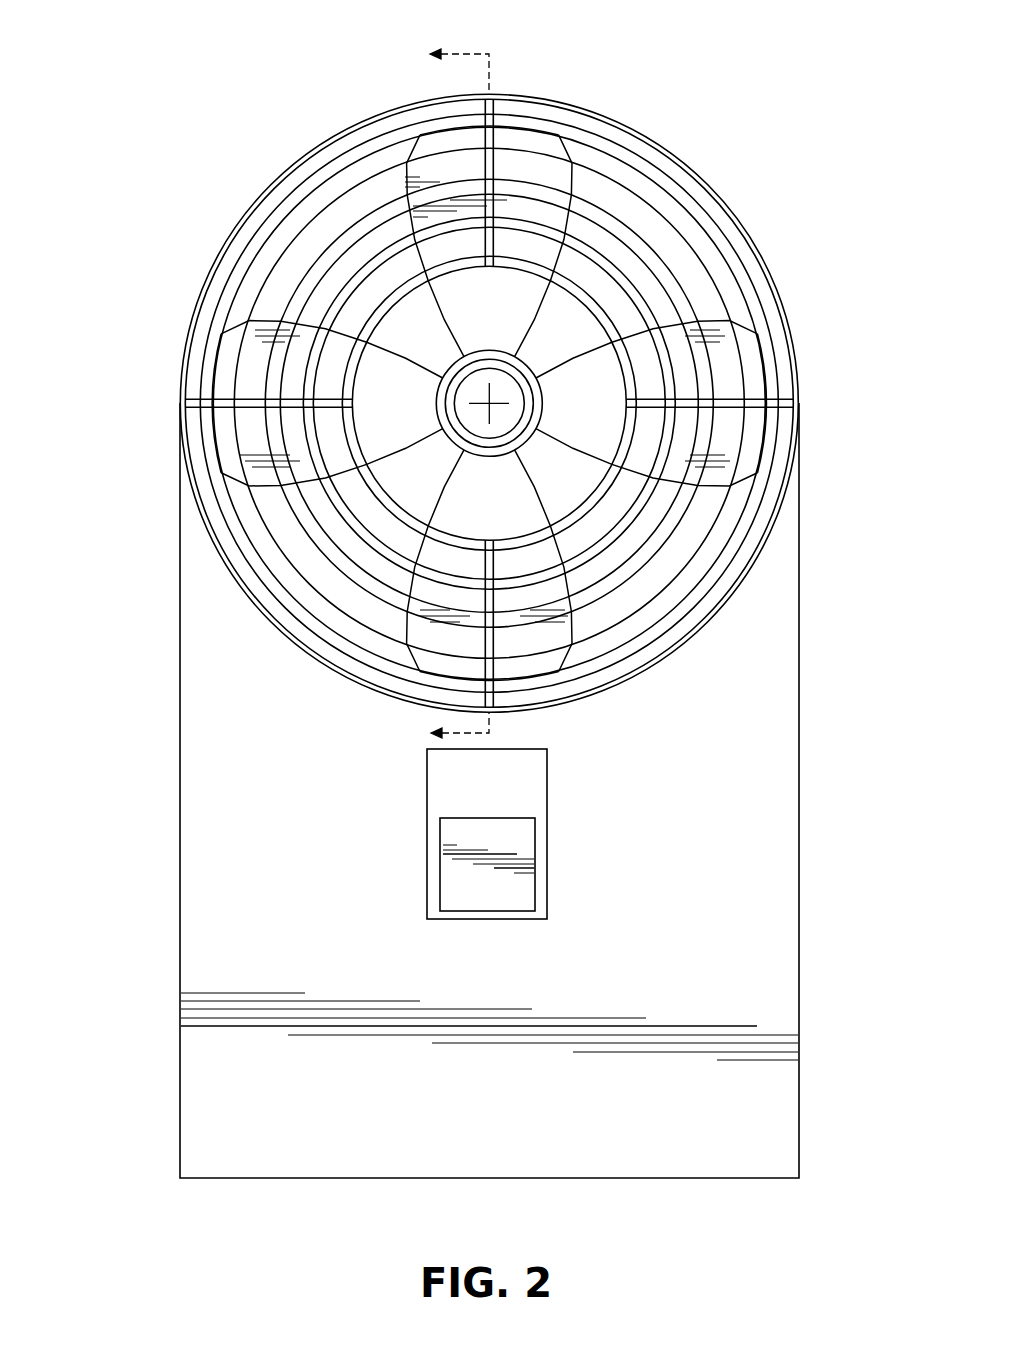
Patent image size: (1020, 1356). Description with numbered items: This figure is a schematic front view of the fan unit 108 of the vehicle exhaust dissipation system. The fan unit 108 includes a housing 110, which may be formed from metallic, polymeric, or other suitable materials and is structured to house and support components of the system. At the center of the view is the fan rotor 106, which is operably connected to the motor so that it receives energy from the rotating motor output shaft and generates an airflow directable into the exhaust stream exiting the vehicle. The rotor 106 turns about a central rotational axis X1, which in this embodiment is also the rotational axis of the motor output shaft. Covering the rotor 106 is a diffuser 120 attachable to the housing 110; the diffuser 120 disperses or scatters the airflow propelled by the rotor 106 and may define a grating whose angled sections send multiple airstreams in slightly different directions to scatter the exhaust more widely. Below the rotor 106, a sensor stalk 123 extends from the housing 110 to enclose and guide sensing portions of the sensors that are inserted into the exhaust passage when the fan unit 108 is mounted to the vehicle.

The fan unit 108 is at (718, 33).
The fan rotor 106 is at (455, 133).
The diffuser 120 is at (266, 189).
The housing 110 is at (180, 620).
The sensor stalk 123 is at (427, 793).
The central rotational axis X1 is at (490, 402).